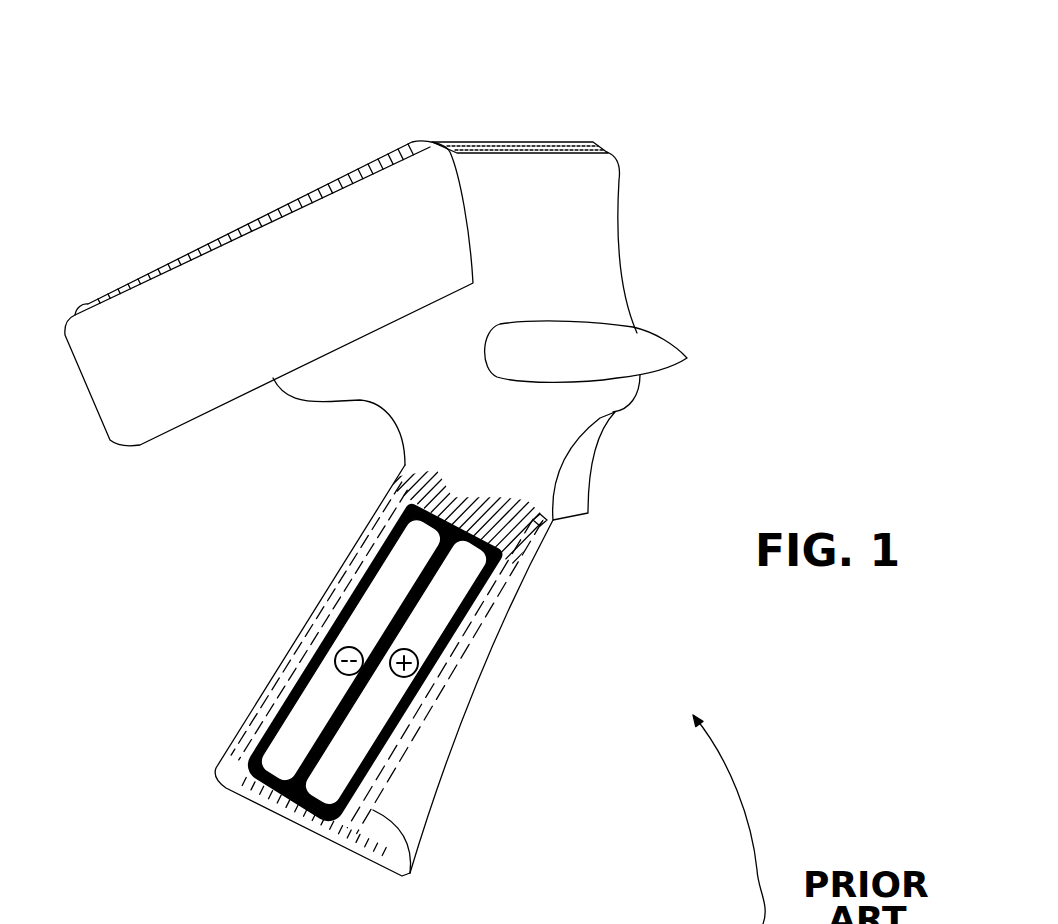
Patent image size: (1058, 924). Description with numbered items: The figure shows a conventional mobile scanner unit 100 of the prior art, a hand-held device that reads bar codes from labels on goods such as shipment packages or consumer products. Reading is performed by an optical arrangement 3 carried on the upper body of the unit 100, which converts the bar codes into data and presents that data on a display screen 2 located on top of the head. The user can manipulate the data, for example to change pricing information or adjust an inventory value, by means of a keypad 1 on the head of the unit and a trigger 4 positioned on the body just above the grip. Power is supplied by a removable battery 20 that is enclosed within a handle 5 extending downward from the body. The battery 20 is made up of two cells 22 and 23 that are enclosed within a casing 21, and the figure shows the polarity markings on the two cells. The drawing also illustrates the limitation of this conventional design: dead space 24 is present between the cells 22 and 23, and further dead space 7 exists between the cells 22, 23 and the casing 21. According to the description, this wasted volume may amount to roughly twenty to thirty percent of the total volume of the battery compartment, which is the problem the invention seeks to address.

The mobile scanner unit 100 is at (690, 133).
The keypad 1 is at (306, 188).
The display screen 2 is at (541, 136).
The optical arrangement 3 is at (620, 228).
The trigger 4 is at (610, 446).
The handle 5 is at (474, 685).
The dead space 7 is at (397, 770).
The removable battery 20 is at (482, 605).
The casing 21 is at (386, 527).
The cell 22 is at (366, 707).
The cell 23 is at (286, 748).
The dead space 24 is at (537, 520).